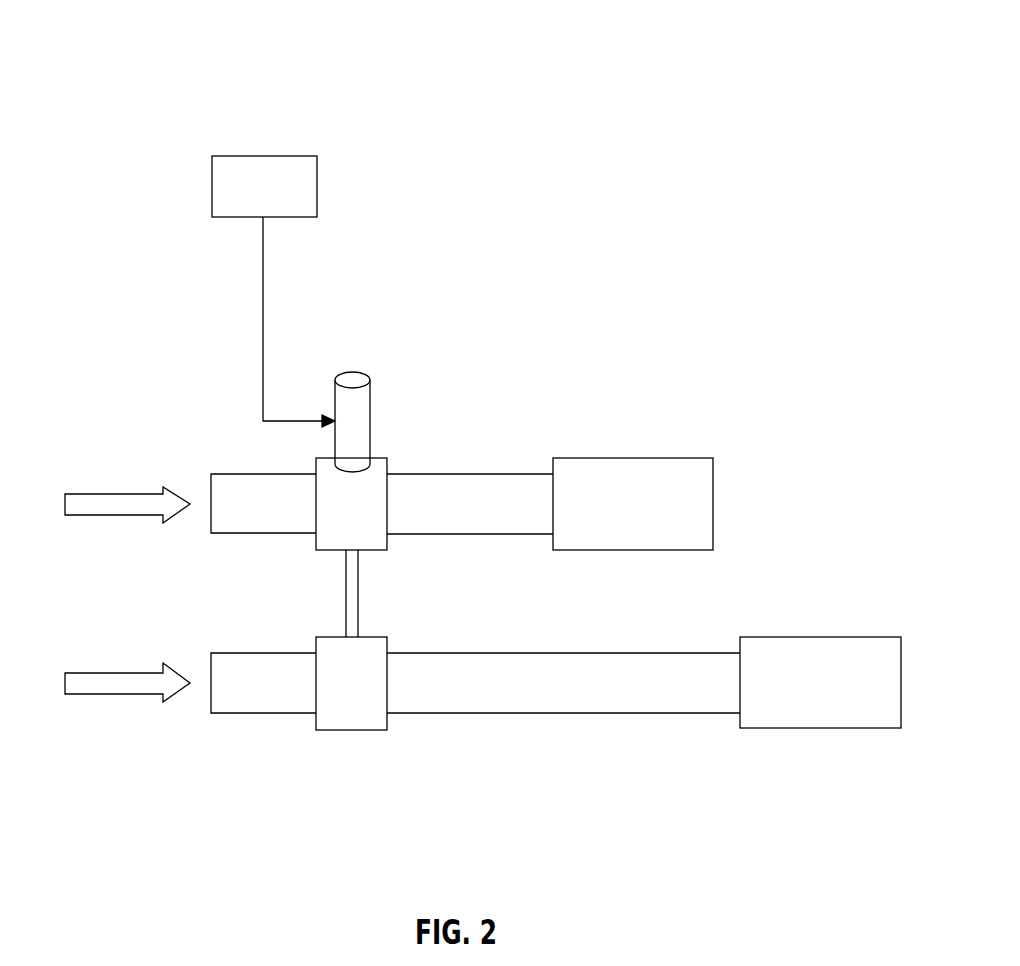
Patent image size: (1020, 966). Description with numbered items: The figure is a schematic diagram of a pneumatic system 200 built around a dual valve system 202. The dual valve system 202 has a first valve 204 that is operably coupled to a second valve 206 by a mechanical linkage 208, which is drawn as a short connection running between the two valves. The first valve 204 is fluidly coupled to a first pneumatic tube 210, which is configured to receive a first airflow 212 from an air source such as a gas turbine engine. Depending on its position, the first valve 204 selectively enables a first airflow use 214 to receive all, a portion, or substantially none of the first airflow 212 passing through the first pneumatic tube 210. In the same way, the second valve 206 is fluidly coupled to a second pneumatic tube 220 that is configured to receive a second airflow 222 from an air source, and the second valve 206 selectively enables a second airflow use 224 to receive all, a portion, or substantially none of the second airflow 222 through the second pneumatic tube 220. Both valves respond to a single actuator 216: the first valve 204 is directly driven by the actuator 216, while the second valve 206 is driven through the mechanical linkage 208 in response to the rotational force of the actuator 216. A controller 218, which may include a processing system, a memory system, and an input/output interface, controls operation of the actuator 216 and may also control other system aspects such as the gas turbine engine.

The pneumatic system 200 is at (752, 45).
The dual valve system 202 is at (428, 318).
The first valve 204 is at (378, 457).
The second valve 206 is at (380, 636).
The mechanical linkage 208 is at (343, 588).
The first pneumatic tube 210 is at (230, 473).
The first airflow 212 is at (85, 493).
The first airflow use 214 is at (680, 457).
The actuator 216 is at (358, 368).
The controller 218 is at (298, 155).
The second pneumatic tube 220 is at (230, 652).
The second airflow 222 is at (85, 672).
The second airflow use 224 is at (868, 636).